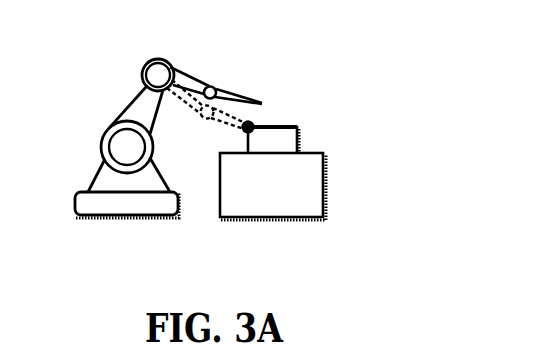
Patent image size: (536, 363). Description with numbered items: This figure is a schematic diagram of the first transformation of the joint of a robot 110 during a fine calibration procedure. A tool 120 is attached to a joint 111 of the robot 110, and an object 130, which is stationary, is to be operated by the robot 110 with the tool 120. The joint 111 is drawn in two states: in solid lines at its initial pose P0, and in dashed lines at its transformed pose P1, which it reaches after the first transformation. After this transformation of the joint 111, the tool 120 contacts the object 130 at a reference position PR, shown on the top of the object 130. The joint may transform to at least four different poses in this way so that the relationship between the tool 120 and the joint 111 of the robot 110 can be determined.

The robot 110 is at (139, 60).
The joint 111 is at (212, 86).
The tool 120 is at (262, 103).
The object 130 is at (298, 135).
The initial pose P0 is at (225, 83).
The transformed pose P1 is at (226, 135).
The reference position PR is at (243, 125).